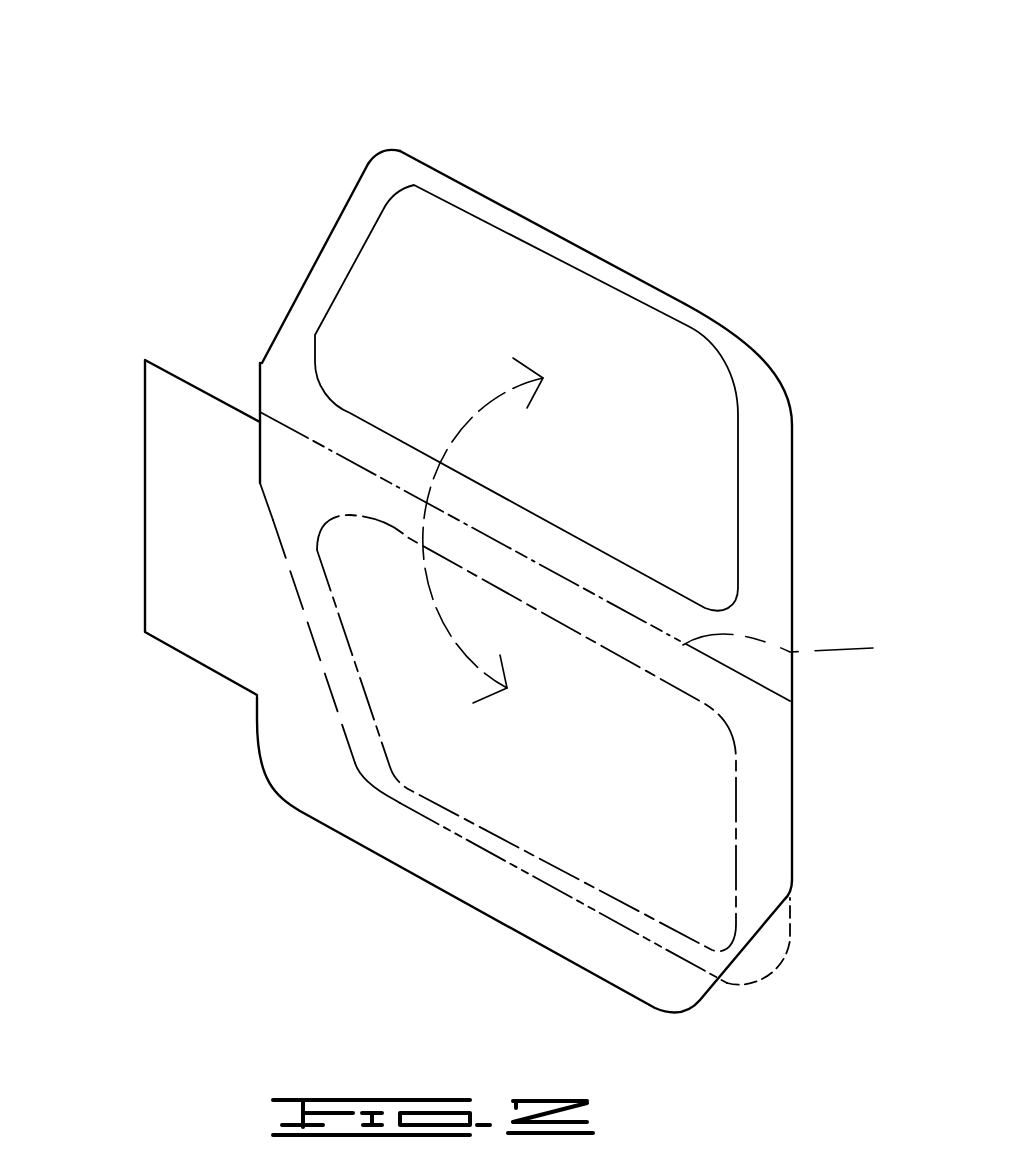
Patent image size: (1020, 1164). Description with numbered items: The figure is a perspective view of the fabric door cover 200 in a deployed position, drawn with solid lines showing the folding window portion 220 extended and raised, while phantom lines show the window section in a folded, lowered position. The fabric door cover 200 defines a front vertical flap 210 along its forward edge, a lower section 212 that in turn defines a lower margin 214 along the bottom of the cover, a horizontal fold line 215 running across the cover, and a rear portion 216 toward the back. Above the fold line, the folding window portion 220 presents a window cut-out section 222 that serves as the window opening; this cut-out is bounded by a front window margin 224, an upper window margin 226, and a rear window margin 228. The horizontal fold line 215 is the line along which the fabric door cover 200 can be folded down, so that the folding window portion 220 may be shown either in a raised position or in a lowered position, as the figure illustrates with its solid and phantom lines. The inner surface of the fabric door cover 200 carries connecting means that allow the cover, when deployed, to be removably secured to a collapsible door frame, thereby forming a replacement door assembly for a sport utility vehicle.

The fabric door cover 200 is at (160, 84).
The front vertical flap 210 is at (168, 493).
The lower section 212 is at (312, 768).
The lower margin 214 is at (440, 888).
The horizontal fold line 215 is at (798, 650).
The rear portion 216 is at (765, 800).
The folding window portion 220 is at (765, 440).
The window cut-out section 222 is at (643, 367).
The front window margin 224 is at (320, 282).
The upper window margin 226 is at (497, 210).
The rear window margin 228 is at (770, 557).